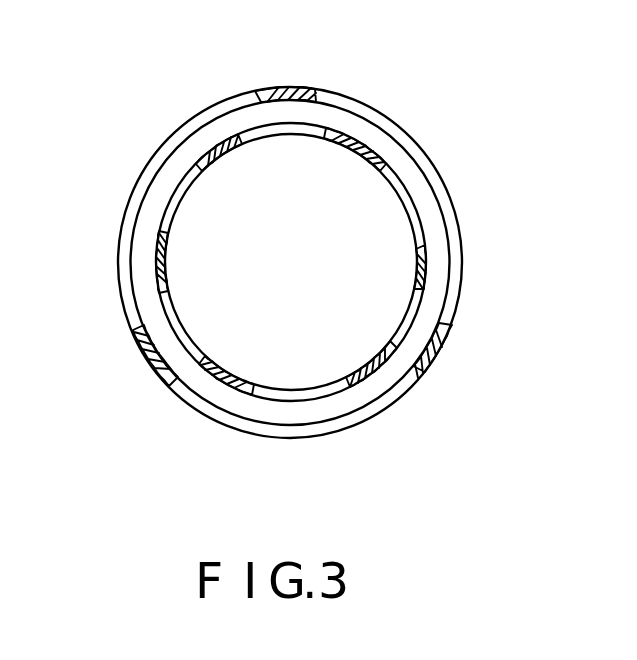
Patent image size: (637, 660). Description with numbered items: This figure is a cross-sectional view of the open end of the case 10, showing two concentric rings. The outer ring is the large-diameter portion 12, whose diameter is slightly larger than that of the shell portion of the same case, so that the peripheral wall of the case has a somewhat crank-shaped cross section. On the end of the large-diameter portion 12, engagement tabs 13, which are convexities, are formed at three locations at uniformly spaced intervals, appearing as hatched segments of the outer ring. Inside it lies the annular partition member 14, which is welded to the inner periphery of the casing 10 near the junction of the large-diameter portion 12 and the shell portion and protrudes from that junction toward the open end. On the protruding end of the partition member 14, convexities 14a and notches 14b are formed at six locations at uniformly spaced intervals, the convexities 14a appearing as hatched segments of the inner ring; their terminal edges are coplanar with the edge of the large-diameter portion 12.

The case 10 is at (463, 284).
The large-diameter portion 12 is at (417, 389).
The engagement tabs 13 is at (312, 88).
The annular partition member 14 is at (395, 333).
The convexities 14a is at (218, 148).
The notches 14b is at (325, 135).